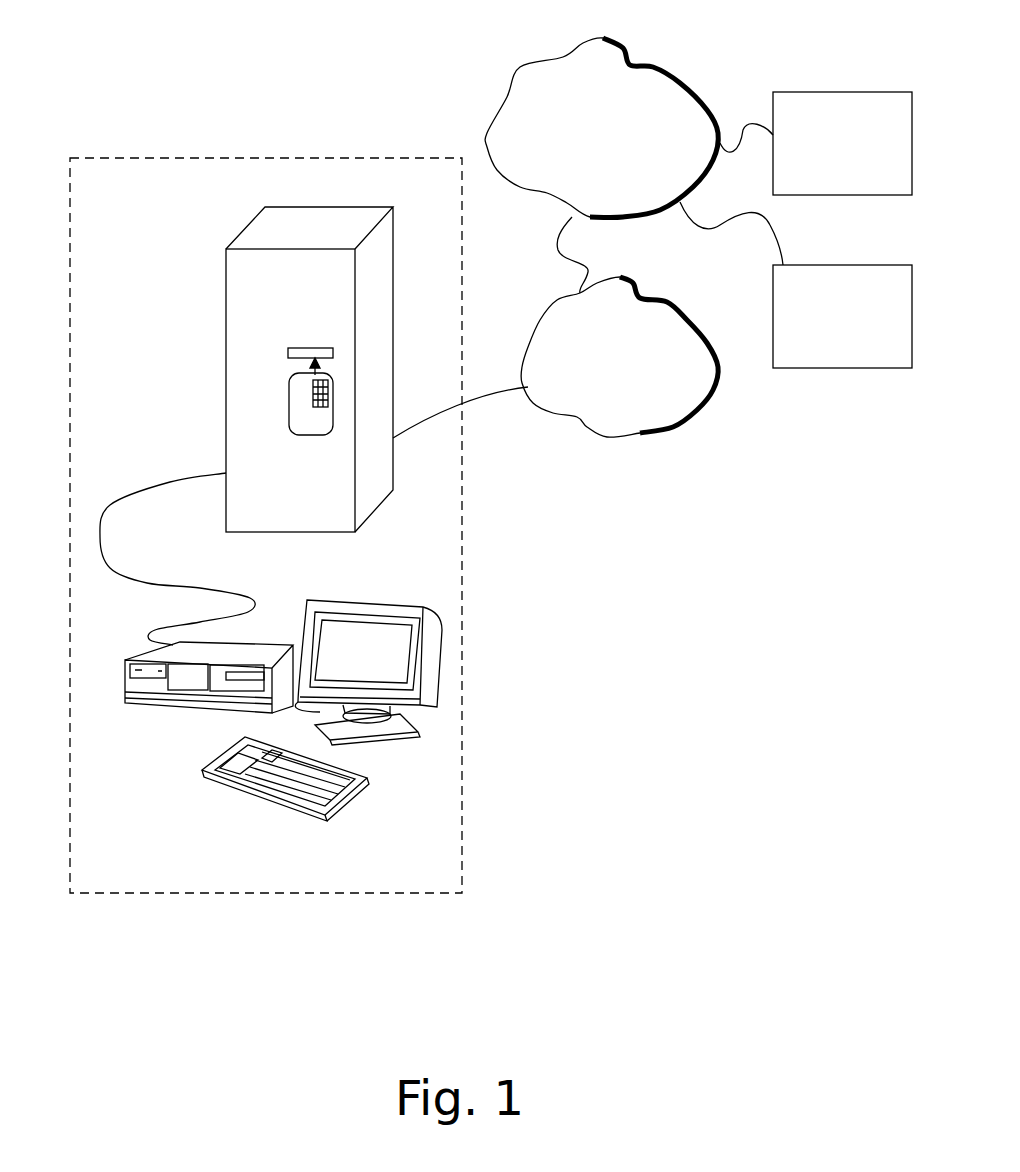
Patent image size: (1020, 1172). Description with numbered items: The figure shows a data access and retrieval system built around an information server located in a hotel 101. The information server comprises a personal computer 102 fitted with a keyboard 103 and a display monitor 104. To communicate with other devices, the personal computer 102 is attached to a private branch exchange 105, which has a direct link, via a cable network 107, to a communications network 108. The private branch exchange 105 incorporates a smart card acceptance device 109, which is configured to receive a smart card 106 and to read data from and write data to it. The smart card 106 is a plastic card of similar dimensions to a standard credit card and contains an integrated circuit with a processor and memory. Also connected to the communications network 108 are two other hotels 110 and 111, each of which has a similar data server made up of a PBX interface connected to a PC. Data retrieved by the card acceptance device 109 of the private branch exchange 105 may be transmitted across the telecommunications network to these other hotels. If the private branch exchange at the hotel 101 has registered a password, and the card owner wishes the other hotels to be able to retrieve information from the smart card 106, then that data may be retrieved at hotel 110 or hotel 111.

The hotel 101 is at (260, 158).
The personal computer 102 is at (137, 703).
The keyboard 103 is at (227, 780).
The display monitor 104 is at (405, 737).
The private branch exchange 105 is at (233, 312).
The smart card 106 is at (308, 423).
The cable network 107 is at (643, 437).
The communications network 108 is at (633, 63).
The card acceptance device 109 is at (317, 350).
The hotel 110 is at (805, 92).
The hotel 111 is at (795, 368).